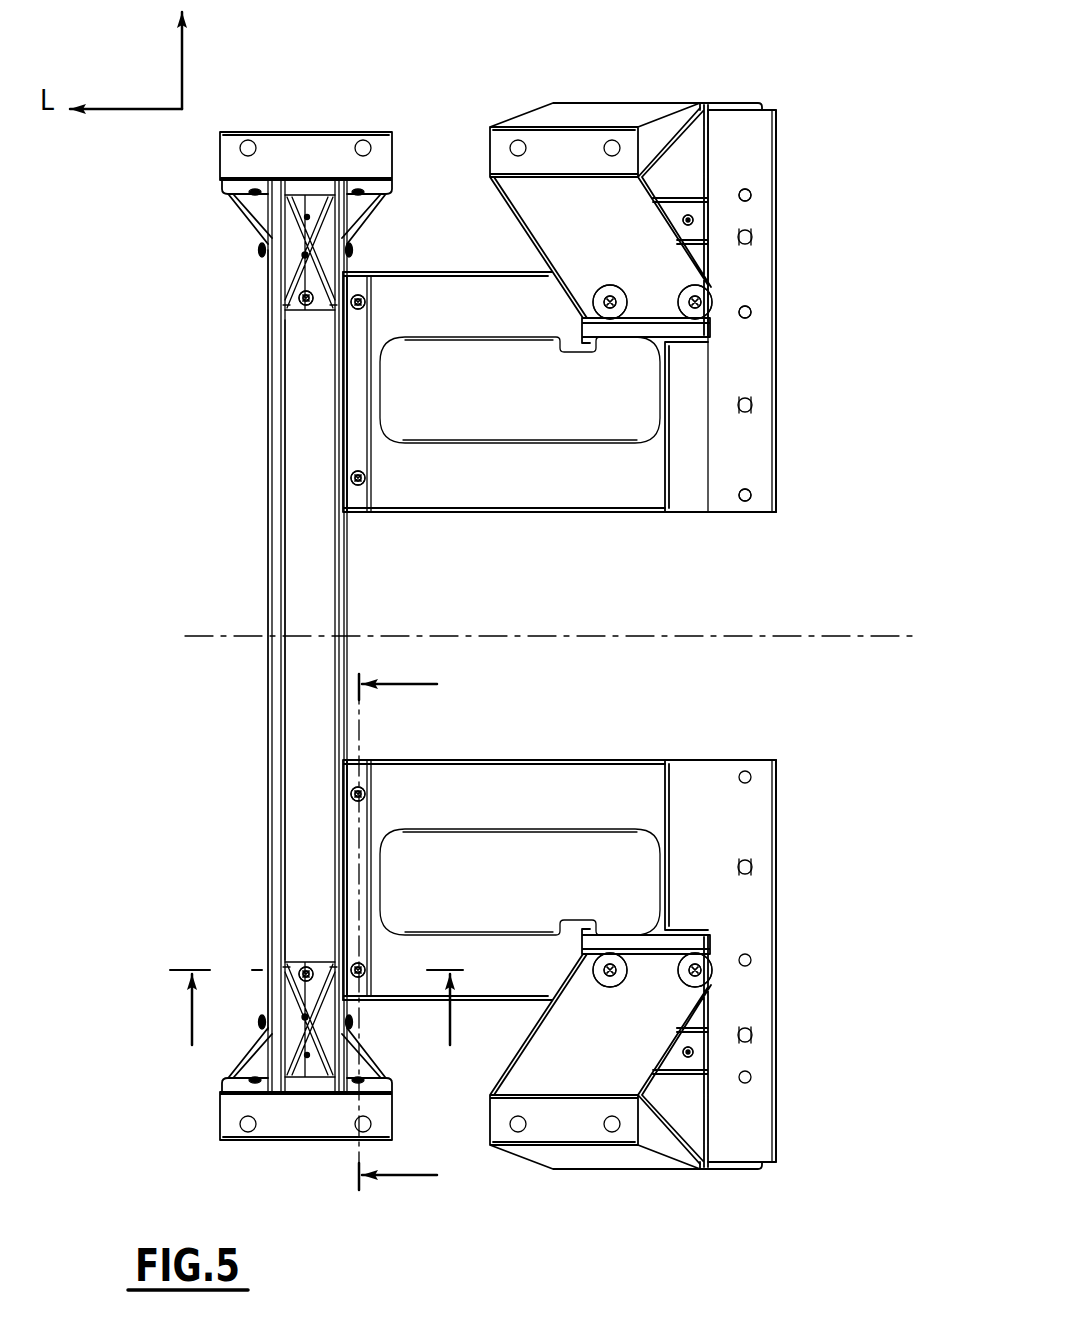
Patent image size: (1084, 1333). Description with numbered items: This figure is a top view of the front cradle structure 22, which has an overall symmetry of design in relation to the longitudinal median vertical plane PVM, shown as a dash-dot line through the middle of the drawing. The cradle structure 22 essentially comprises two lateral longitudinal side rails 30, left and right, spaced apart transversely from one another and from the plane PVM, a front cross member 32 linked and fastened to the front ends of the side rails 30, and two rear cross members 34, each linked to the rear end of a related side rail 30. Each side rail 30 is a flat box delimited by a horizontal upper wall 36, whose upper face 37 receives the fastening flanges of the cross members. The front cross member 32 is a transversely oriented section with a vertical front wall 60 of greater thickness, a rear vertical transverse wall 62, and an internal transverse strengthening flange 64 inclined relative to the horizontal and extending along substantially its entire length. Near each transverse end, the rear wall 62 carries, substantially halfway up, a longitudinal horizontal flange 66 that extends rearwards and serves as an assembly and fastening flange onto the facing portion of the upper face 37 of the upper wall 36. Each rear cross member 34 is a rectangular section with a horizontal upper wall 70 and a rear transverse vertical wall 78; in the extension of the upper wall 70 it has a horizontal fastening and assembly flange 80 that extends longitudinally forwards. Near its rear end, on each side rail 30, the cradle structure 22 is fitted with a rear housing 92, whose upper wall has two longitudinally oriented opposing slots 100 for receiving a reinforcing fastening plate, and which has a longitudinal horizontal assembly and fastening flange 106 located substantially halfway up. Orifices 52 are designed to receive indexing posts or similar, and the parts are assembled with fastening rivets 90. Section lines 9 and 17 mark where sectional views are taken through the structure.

The section line 9 is at (398, 919).
The section line 17 is at (318, 1007).
The front cradle structure 22 is at (822, 333).
The longitudinal side rail 30 is at (597, 514).
The front cross member 32 is at (268, 728).
The rear cross member 34 is at (780, 432).
The horizontal upper wall 36 is at (475, 478).
The upper face 37 is at (546, 490).
The orifice 52 is at (750, 193).
The vertical front wall 60 is at (265, 688).
The rear vertical transverse wall 62 is at (362, 733).
The internal transverse strengthening flange 64 is at (303, 620).
The longitudinal horizontal flange 66 is at (385, 395).
The horizontal upper wall 70 is at (740, 357).
The rear transverse vertical wall 78 is at (776, 240).
The horizontal fastening and assembly flange 80 is at (688, 457).
The rivet 90 is at (262, 250).
The rear housing 92 is at (577, 196).
The slot 100 is at (695, 1070).
The longitudinal horizontal assembly and fastening flange 106 is at (585, 343).
The longitudinal median vertical plane PVM is at (848, 637).